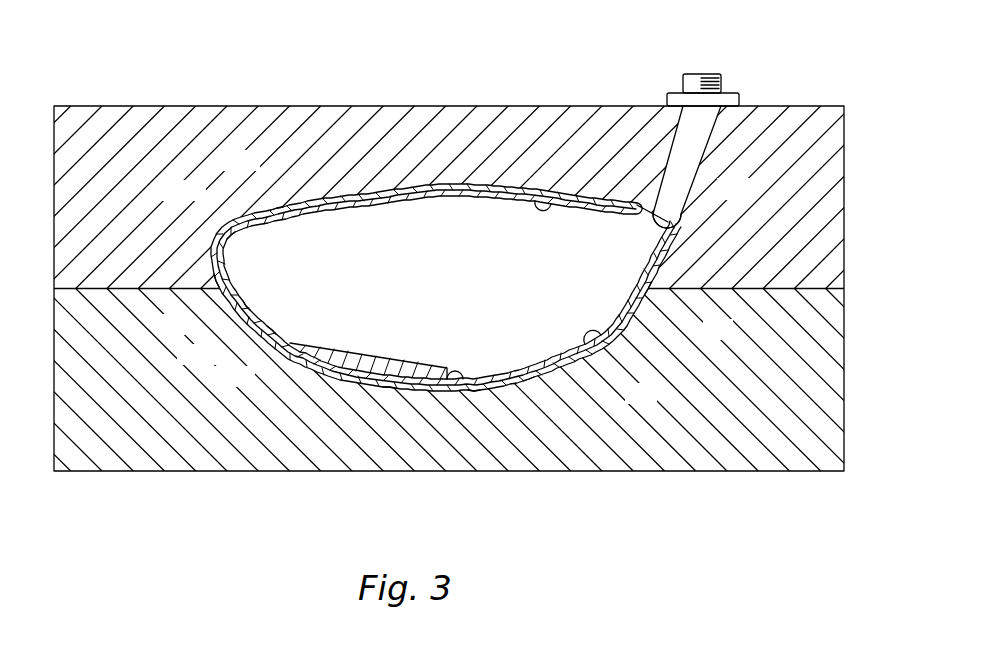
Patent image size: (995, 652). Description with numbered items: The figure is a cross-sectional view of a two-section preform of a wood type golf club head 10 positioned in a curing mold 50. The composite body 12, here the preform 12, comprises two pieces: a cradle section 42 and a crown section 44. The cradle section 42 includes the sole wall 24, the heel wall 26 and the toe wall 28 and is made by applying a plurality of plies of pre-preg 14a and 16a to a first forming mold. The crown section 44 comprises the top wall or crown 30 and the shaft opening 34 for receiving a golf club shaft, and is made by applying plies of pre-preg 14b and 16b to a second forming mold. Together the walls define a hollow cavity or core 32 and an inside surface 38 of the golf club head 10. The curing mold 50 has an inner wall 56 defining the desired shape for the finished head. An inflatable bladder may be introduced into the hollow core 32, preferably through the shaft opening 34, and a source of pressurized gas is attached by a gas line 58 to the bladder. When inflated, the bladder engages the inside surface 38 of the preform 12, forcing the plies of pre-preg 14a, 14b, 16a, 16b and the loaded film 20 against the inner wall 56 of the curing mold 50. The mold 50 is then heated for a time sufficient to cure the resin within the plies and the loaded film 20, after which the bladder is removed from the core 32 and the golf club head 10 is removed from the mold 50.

The golf club head 10 is at (446, 49).
The composite body 12 is at (530, 381).
The ply of pre-preg 14a is at (234, 221).
The ply of pre-preg 14b is at (250, 320).
The ply of pre-preg 16a is at (279, 208).
The ply of pre-preg 16b is at (271, 334).
The loaded film 20 is at (400, 365).
The sole wall 24 is at (392, 391).
The heel wall 26 is at (652, 309).
The toe wall 28 is at (222, 296).
The crown 30 is at (320, 187).
The hollow cavity 32 is at (476, 283).
The shaft opening 34 is at (676, 207).
The inside surface 38 is at (538, 188).
The cradle section 42 is at (474, 392).
The crown section 44 is at (478, 185).
The curing mold 50 is at (846, 325).
The inner wall 56 is at (603, 338).
The gas line 58 is at (697, 73).